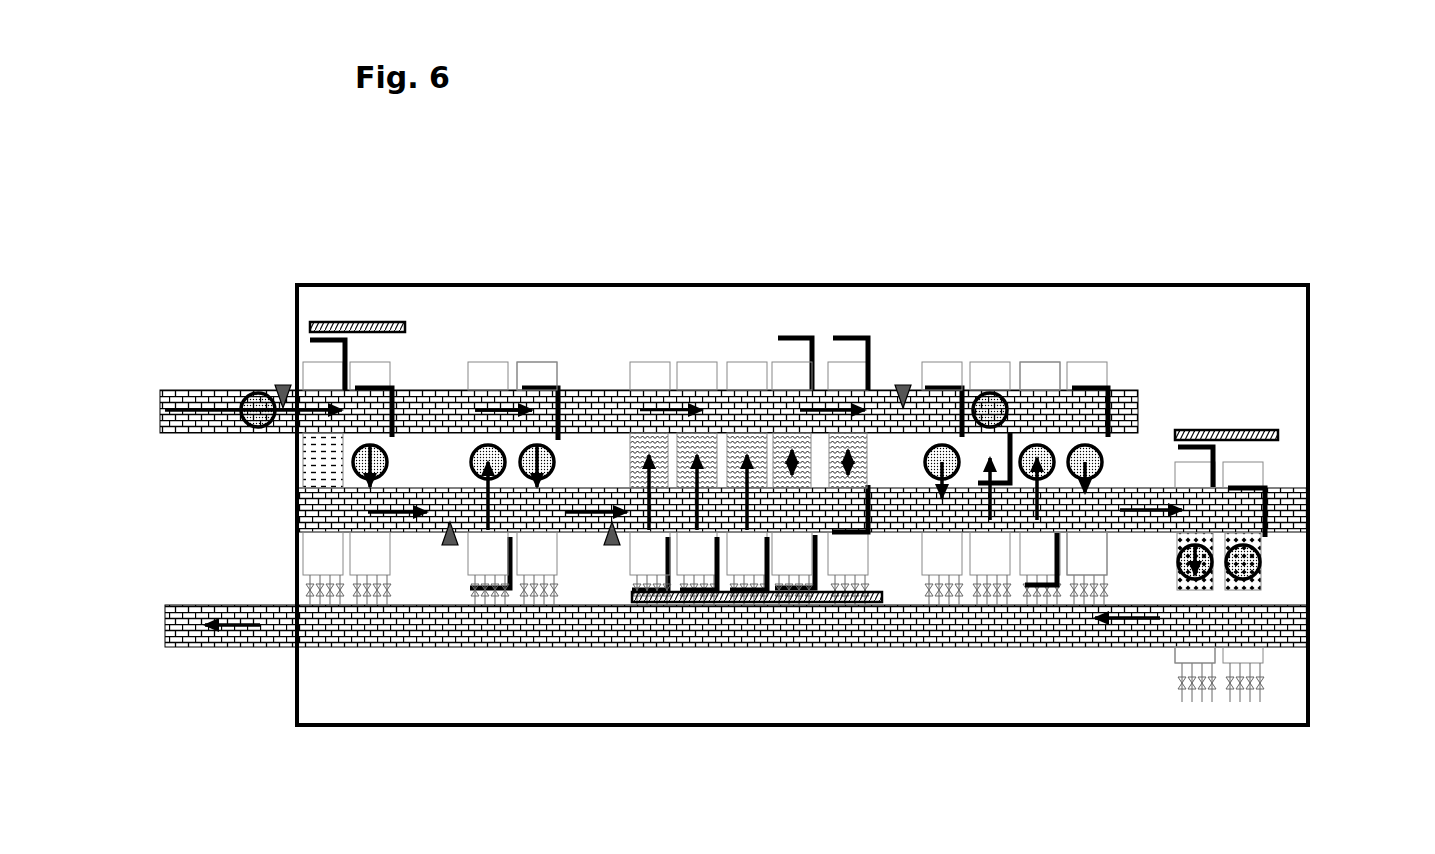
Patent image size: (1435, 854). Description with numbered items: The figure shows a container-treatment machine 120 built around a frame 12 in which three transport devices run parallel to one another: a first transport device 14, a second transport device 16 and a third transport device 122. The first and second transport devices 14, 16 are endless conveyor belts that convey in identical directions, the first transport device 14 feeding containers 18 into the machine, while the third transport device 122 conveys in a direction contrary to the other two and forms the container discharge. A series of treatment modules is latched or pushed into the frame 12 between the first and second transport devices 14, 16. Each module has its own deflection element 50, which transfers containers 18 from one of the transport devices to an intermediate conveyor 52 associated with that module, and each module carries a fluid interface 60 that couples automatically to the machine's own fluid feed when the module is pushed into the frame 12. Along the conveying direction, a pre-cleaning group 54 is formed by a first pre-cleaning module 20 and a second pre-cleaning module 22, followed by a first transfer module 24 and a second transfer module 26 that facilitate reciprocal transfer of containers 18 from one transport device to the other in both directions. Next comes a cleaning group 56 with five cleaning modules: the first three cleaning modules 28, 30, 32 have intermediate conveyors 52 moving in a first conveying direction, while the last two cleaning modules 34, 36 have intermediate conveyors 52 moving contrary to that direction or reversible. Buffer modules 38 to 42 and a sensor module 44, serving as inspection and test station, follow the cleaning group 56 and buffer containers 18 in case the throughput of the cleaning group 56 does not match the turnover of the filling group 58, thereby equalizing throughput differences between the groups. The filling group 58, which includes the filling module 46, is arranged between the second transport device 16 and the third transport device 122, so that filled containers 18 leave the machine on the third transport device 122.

The frame 12 is at (295, 312).
The first transport device 14 is at (313, 407).
The second transport device 16 is at (1290, 498).
The containers 18 is at (262, 415).
The first pre-cleaning module 20 is at (303, 462).
The second pre-cleaning module 22 is at (405, 565).
The first transfer module 24 is at (493, 373).
The second transfer module 26 is at (536, 373).
The first cleaning module 28 is at (651, 373).
The second cleaning module 30 is at (698, 562).
The third cleaning module 32 is at (747, 358).
The fourth cleaning module 34 is at (796, 373).
The fifth cleaning module 36 is at (863, 373).
The buffer module 38 is at (942, 356).
The buffer module 42 is at (1037, 373).
The sensor module 44 is at (1083, 545).
The first filling module 46 is at (1197, 662).
The deflection element 50 is at (318, 327).
The intermediate conveyor 52 is at (378, 378).
The pre-cleaning group 54 is at (337, 302).
The cleaning group 56 is at (789, 655).
The filling group 58 is at (1230, 398).
The fluid interface 60 is at (295, 648).
The container-treatment machine 120 is at (1080, 148).
The third transport device 122 is at (987, 640).